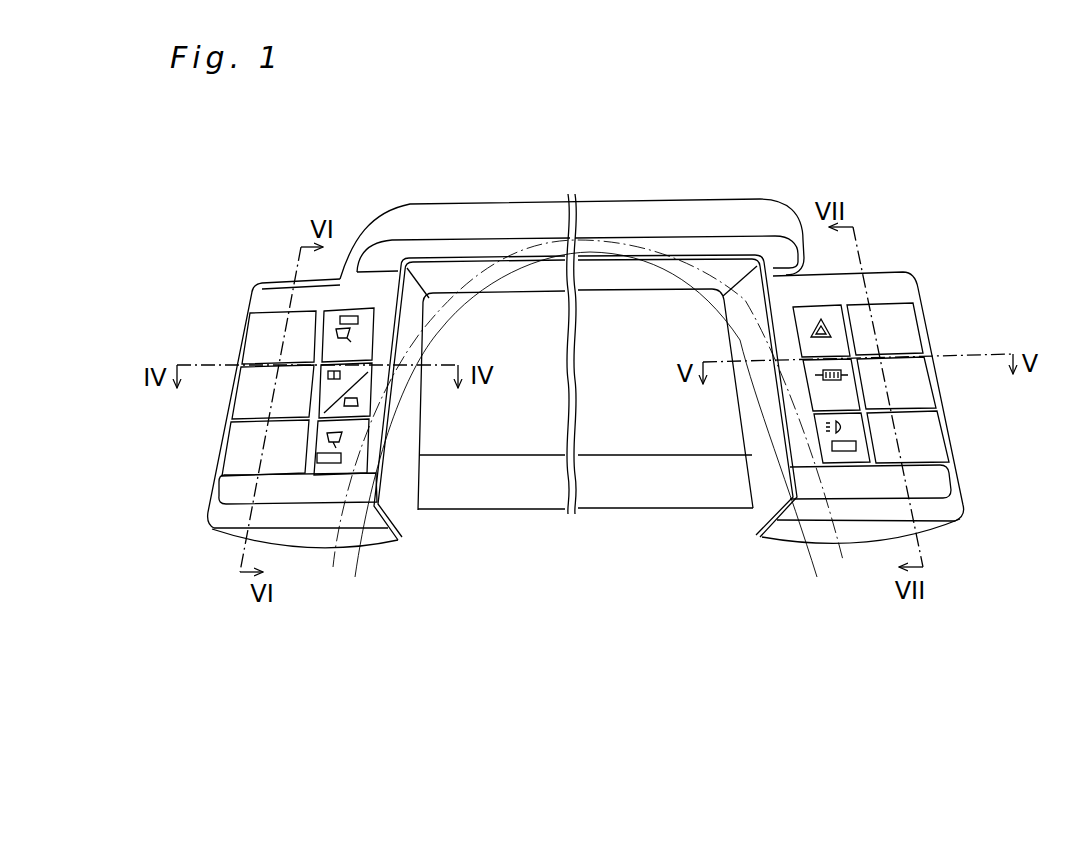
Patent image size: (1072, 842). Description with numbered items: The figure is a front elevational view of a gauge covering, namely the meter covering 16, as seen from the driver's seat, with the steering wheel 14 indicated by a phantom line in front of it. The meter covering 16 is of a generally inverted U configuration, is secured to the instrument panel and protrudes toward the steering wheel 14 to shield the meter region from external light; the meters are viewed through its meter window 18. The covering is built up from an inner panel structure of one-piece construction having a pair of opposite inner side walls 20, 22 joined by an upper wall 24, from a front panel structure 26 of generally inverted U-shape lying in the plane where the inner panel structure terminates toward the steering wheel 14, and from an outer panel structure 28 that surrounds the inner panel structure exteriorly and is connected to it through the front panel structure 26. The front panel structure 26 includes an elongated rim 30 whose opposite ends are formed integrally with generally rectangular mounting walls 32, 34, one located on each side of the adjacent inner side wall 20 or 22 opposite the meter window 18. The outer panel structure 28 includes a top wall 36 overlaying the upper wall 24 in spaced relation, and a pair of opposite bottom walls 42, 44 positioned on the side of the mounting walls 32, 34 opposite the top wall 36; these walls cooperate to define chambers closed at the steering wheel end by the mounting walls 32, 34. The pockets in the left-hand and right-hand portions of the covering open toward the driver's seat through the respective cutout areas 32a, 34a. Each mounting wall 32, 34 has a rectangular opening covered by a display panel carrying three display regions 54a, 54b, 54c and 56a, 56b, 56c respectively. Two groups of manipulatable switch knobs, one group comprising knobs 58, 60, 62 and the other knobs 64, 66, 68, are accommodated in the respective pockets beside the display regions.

The steering wheel 14 is at (330, 573).
The meter covering 16 is at (490, 216).
The meter window 18 is at (587, 398).
The inner side wall 20 is at (400, 481).
The inner side wall 22 is at (770, 513).
The upper wall 24 is at (590, 268).
The front panel structure 26 is at (665, 253).
The outer panel structure 28 is at (531, 230).
The elongated rim 30 is at (712, 253).
The mounting wall 32 is at (223, 517).
The cutout area 32a is at (281, 300).
The mounting wall 34 is at (933, 508).
The cutout area 34a is at (880, 470).
The top wall 36 is at (437, 246).
The bottom wall 42 is at (302, 537).
The bottom wall 44 is at (800, 535).
The display region 54a is at (362, 329).
The display region 54b is at (352, 388).
The display region 54c is at (344, 447).
The display region 56a is at (807, 327).
The display region 56b is at (817, 370).
The display region 56c is at (820, 428).
The switch knob 58 is at (260, 333).
The switch knob 60 is at (253, 398).
The switch knob 62 is at (240, 452).
The switch knob 64 is at (900, 333).
The switch knob 66 is at (913, 383).
The switch knob 68 is at (923, 440).